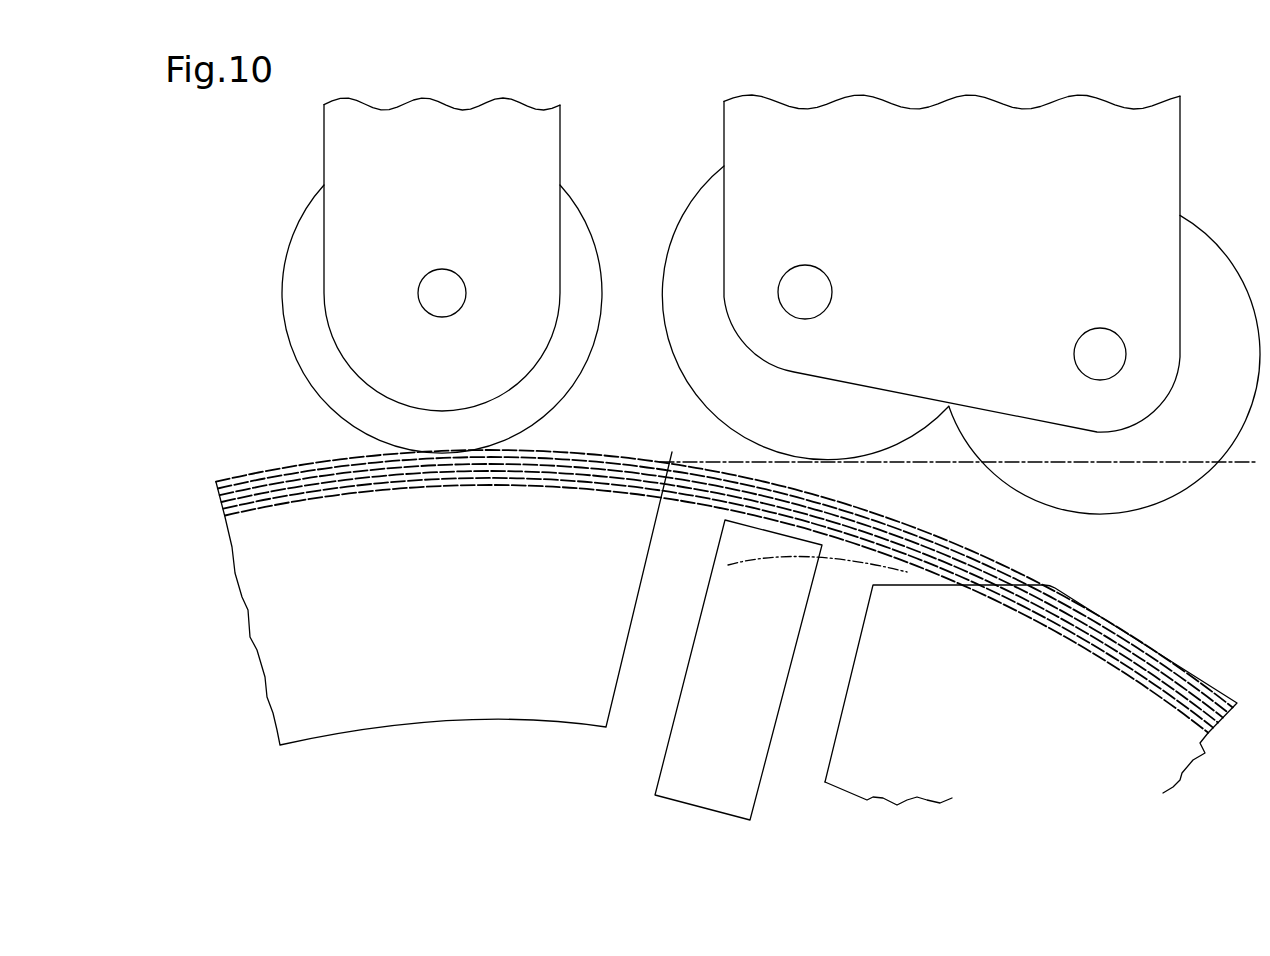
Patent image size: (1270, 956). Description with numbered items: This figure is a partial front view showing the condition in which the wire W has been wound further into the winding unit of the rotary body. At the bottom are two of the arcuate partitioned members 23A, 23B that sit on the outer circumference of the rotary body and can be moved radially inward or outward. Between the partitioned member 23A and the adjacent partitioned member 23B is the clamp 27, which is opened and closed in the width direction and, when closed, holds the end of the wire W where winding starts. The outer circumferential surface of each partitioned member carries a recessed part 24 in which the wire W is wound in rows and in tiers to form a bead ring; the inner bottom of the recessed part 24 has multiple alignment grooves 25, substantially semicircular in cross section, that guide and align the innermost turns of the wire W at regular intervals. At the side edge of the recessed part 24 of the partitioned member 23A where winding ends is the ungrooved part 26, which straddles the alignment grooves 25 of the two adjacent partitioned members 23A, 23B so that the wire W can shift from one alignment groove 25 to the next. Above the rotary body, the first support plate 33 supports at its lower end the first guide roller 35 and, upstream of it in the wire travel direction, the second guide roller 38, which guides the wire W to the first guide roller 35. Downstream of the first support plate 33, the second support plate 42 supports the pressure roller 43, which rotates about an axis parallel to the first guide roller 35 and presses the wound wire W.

The second support plate 42 is at (555, 128).
The pressure roller 43 is at (594, 252).
The first guide roller 35 is at (703, 201).
The first support plate 33 is at (1169, 149).
The second guide roller 38 is at (1213, 245).
The wire W is at (1190, 461).
The alignment grooves 25 is at (345, 488).
The ungrooved part 26 is at (563, 487).
The recessed part 24 is at (1020, 603).
The partitioned member 23A is at (458, 712).
The clamp 27 is at (660, 776).
The partitioned member 23B is at (1128, 598).